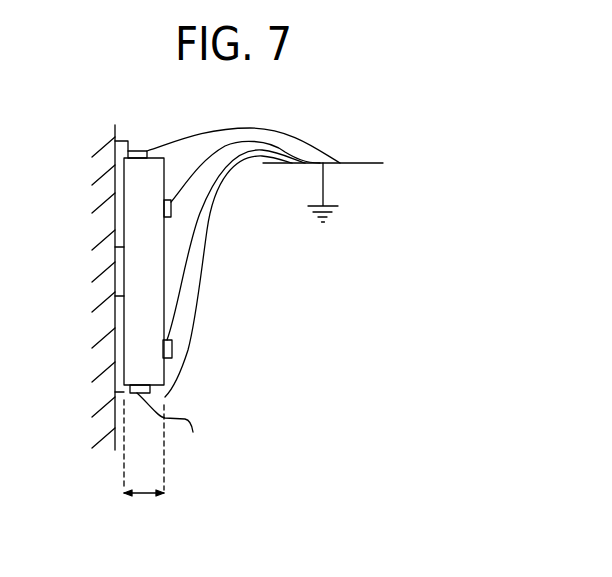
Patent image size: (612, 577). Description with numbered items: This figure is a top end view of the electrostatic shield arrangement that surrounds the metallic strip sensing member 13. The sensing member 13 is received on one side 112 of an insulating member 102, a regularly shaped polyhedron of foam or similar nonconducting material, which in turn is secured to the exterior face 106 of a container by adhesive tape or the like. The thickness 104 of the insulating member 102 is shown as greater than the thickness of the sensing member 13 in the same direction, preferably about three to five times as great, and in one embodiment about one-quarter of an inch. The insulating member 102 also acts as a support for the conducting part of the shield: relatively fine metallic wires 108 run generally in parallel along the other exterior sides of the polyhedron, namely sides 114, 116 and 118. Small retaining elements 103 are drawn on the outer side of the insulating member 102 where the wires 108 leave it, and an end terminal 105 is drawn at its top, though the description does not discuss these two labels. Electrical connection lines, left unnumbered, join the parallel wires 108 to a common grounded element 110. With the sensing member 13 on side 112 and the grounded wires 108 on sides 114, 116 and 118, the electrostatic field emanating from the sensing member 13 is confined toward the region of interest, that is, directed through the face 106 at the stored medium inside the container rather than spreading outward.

The sensing member 13 is at (128, 300).
The insulating member 102 is at (137, 188).
The clips 103 is at (171, 215).
The thickness 104 is at (143, 494).
The upper terminal 105 is at (138, 150).
The exterior surface 106 is at (114, 140).
The metallic wires 108 is at (175, 424).
The grounded element 110 is at (368, 163).
The side 112 is at (122, 357).
The side 114 is at (160, 145).
The side 116 is at (168, 360).
The side 118 is at (123, 398).